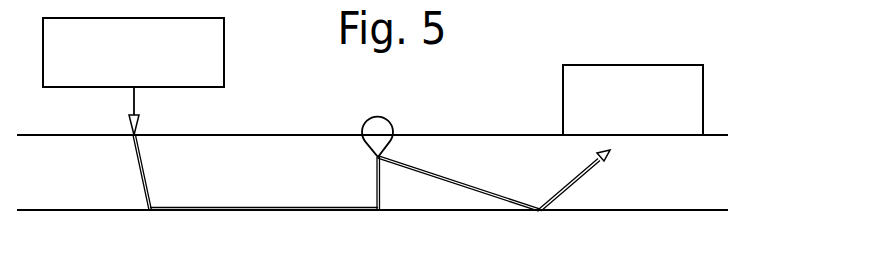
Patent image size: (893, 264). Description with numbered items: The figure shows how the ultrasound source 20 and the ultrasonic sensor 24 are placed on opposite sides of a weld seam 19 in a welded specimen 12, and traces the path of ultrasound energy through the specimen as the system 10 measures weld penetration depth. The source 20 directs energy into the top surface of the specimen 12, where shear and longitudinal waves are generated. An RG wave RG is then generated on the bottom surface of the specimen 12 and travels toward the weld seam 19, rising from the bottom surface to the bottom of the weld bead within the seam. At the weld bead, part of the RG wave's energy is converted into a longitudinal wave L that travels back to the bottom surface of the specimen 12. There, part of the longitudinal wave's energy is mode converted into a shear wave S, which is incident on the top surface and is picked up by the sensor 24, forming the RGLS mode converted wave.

The system 10 is at (740, 43).
The welded specimen 12 is at (67, 213).
The weld seam 19 is at (363, 127).
The ultrasound source 20 is at (225, 68).
The ultrasonic sensor 24 is at (563, 97).
The RG wave RG is at (268, 206).
The longitudinal wave L is at (475, 180).
The shear wave S is at (562, 183).